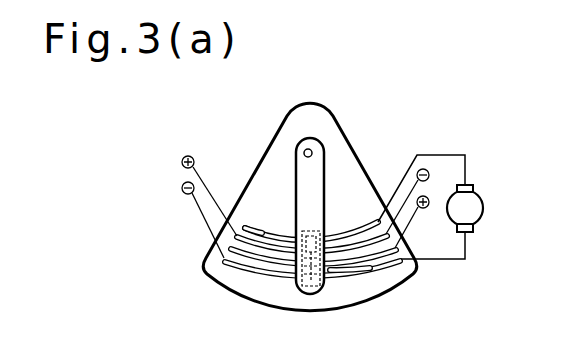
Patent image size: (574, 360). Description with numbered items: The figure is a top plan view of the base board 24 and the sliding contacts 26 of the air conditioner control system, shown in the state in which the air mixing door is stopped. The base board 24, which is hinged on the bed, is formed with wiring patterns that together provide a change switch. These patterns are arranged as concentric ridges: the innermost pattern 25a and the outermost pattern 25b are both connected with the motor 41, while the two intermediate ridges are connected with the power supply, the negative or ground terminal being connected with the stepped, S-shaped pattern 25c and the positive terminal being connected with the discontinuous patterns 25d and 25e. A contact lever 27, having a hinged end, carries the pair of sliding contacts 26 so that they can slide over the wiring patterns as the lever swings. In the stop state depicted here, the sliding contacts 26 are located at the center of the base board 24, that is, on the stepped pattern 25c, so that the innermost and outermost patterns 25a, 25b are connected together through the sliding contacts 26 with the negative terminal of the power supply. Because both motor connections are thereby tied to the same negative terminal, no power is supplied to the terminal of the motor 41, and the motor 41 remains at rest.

The base board 24 is at (387, 288).
The innermost pattern 25a is at (271, 233).
The outermost pattern 25b is at (224, 266).
The stepped pattern 25c is at (229, 250).
The discontinuous pattern 25d is at (242, 224).
The discontinuous pattern 25e is at (350, 273).
The sliding contacts 26 is at (294, 264).
The contact lever 27 is at (313, 165).
The motor 41 is at (482, 218).